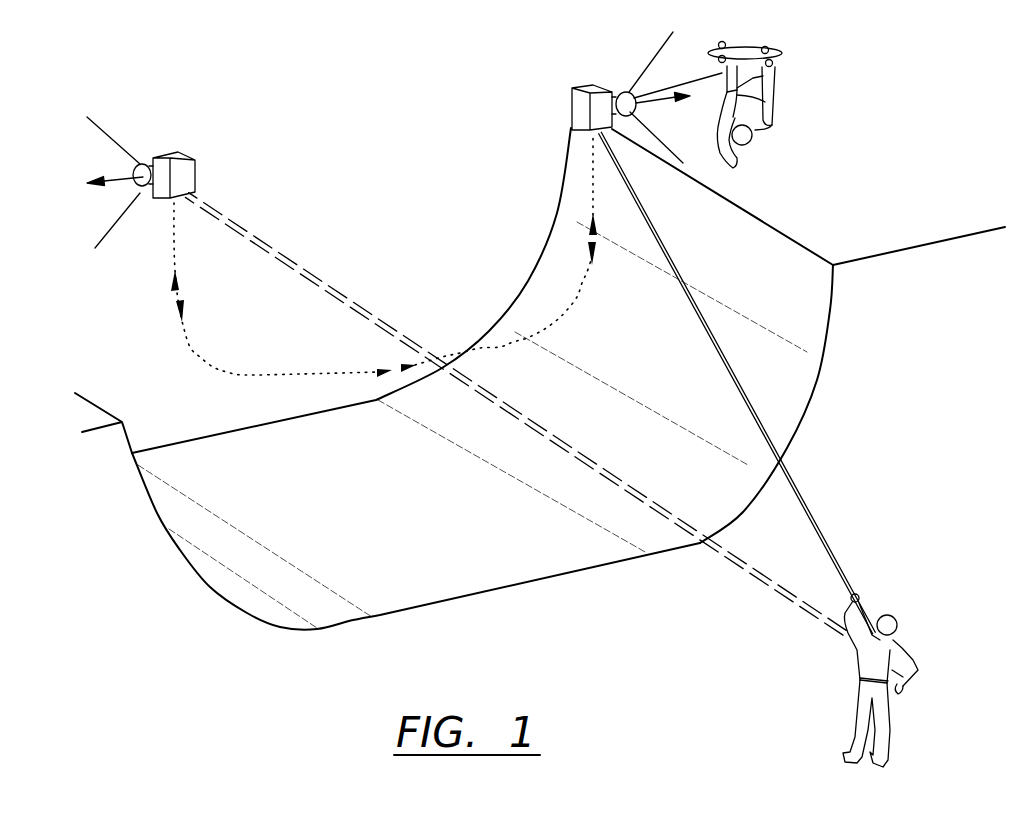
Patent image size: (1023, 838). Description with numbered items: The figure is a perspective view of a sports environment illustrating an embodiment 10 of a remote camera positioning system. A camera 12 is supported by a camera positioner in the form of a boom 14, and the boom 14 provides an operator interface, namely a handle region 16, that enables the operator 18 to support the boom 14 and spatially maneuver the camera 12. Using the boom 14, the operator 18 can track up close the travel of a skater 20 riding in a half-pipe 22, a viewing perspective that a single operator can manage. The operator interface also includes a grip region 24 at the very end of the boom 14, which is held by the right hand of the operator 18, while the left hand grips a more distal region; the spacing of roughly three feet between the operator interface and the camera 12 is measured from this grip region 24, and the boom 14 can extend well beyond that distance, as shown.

The embodiment 10 is at (848, 443).
The camera 12 is at (571, 110).
The boom 14 is at (830, 537).
The handle region 16 is at (908, 627).
The operator 18 is at (867, 678).
The skater 20 is at (782, 84).
The half-pipe 22 is at (283, 587).
The grip region 24 is at (900, 692).